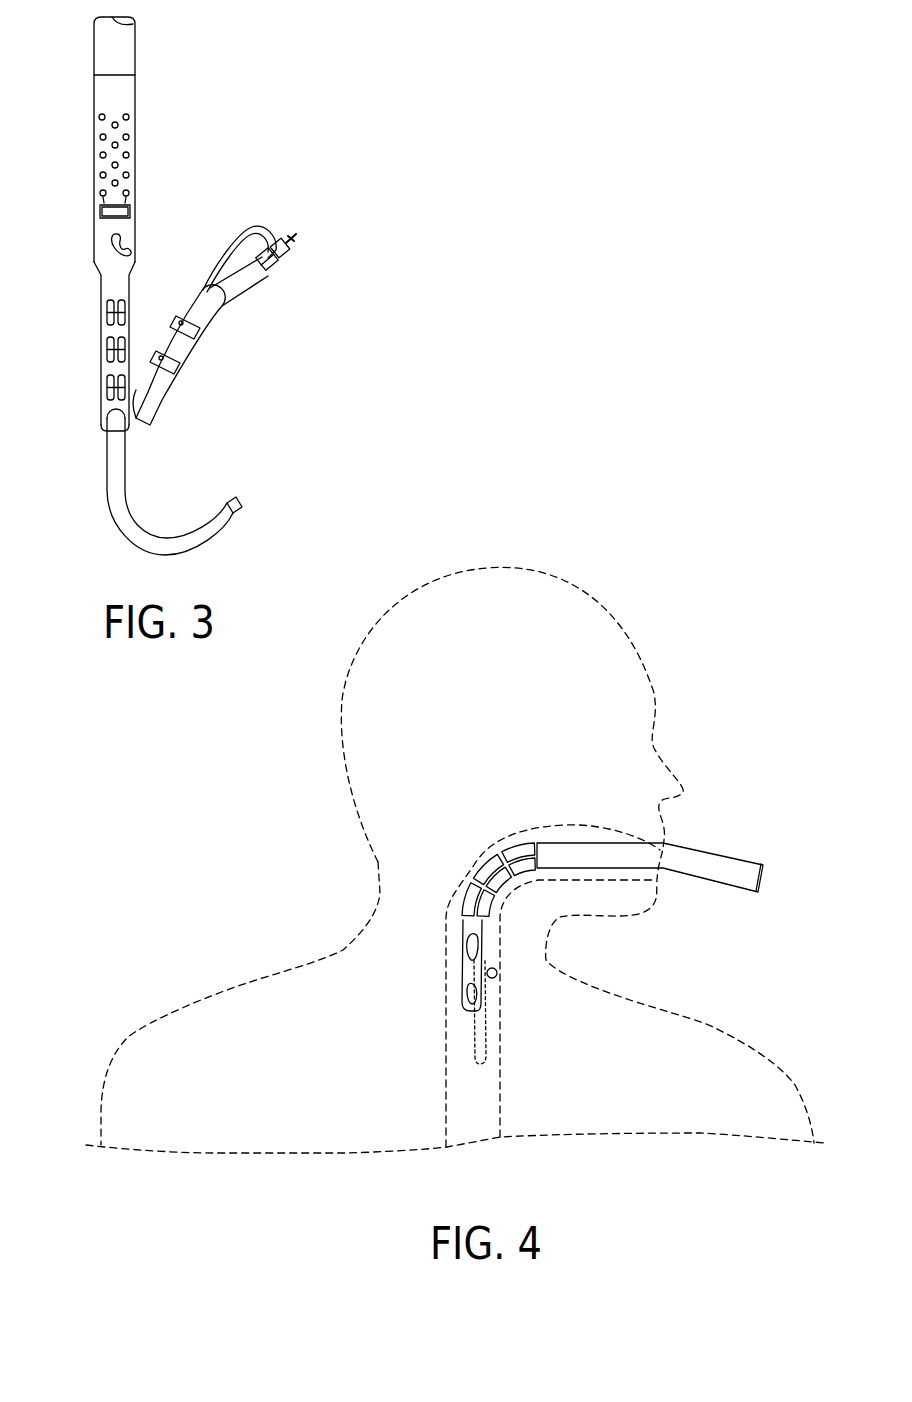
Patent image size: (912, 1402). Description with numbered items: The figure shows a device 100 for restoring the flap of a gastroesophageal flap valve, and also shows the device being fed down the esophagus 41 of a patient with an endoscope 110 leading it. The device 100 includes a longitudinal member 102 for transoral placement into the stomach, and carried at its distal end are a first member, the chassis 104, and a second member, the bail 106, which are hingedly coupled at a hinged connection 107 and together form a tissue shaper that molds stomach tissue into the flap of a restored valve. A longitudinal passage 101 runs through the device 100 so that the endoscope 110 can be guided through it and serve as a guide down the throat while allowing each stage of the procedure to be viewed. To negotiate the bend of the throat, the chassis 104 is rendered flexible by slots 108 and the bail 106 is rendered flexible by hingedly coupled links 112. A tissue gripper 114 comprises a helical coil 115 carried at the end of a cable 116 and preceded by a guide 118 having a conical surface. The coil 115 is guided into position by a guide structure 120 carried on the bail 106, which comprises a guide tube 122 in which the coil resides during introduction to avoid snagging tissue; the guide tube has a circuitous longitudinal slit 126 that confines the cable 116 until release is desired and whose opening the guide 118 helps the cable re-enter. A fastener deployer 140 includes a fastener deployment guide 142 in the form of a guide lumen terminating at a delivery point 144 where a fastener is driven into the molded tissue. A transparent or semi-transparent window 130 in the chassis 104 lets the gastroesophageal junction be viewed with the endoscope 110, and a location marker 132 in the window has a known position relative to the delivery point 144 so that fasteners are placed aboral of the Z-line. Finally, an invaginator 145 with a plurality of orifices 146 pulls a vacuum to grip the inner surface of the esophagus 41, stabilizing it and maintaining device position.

In FIG. 3, the device 100 is at (238, 148).
In FIG. 4, the device 100 is at (458, 885).
In FIG. 3, the longitudinal passage 101 is at (104, 428).
In FIG. 3, the longitudinal member 102 is at (120, 47).
In FIG. 4, the longitudinal member 102 is at (712, 866).
In FIG. 3, the chassis 104 is at (88, 245).
In FIG. 4, the chassis 104 is at (490, 864).
In FIG. 3, the bail 106 is at (212, 344).
In FIG. 4, the bail 106 is at (463, 956).
In FIG. 3, the hinged connection 107 is at (146, 427).
In FIG. 3, the slots 108 is at (106, 388).
In FIG. 3, the endoscope 110 is at (118, 493).
In FIG. 4, the endoscope 110 is at (473, 1022).
In FIG. 3, the hingedly coupled links 112 is at (205, 290).
In FIG. 3, the tissue gripper 114 is at (308, 243).
In FIG. 3, the helical coil 115 is at (290, 240).
In FIG. 3, the cable 116 is at (280, 255).
In FIG. 3, the guide 118 is at (268, 235).
In FIG. 3, the guide structure 120 is at (270, 302).
In FIG. 3, the guide tube 122 is at (238, 305).
In FIG. 3, the longitudinal slit 126 is at (272, 278).
In FIG. 3, the window 130 is at (128, 205).
In FIG. 3, the location marker 132 is at (103, 185).
In FIG. 3, the fastener deployer 140 is at (130, 228).
In FIG. 3, the fastener deployment guide 142 is at (118, 250).
In FIG. 3, the delivery point 144 is at (128, 258).
In FIG. 3, the invaginator 145 is at (145, 112).
In FIG. 3, the orifices 146 is at (103, 175).
In FIG. 4, the esophagus 41 is at (498, 975).